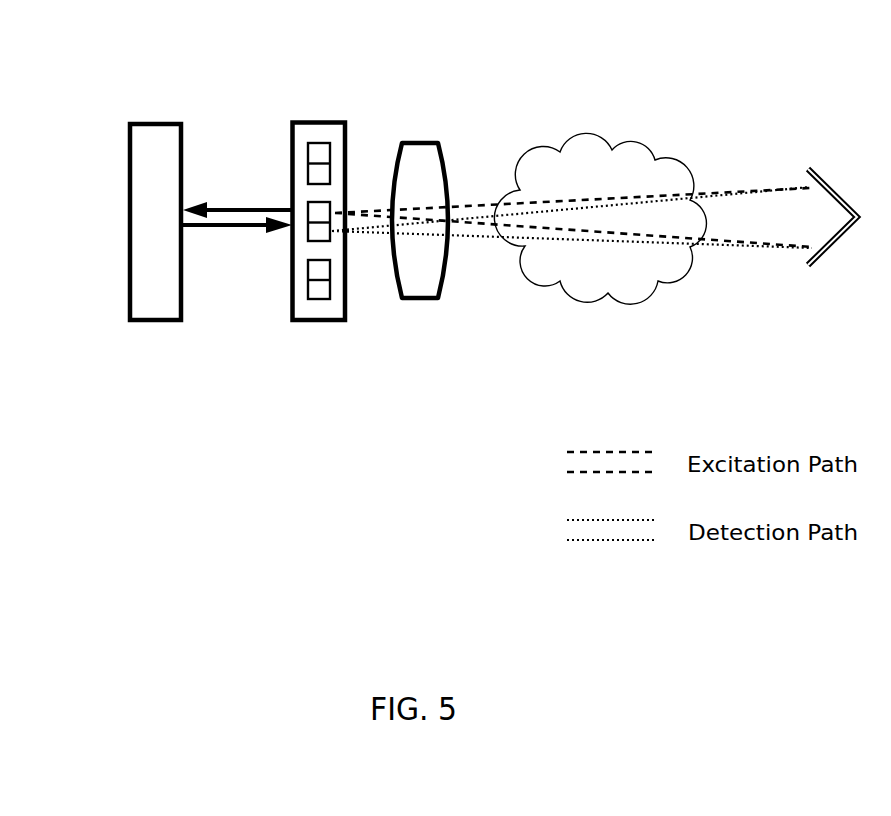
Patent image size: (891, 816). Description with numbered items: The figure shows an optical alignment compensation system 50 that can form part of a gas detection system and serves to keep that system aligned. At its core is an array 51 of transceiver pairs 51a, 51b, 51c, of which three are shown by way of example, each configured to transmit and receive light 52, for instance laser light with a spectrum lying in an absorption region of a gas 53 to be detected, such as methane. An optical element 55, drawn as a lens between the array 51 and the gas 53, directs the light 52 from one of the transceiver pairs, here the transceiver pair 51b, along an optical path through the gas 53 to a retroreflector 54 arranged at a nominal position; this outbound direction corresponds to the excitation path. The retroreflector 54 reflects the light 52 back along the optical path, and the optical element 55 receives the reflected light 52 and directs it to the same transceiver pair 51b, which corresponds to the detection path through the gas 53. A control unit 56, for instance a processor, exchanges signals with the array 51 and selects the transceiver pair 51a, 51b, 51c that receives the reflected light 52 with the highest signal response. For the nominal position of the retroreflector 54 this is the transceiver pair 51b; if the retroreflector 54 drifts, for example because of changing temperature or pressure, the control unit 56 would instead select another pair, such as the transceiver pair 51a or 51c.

The optical alignment compensation system 50 is at (587, 90).
The array of transceiver pairs 51 is at (278, 266).
The transceiver pair 51a is at (315, 150).
The transceiver pair 51b is at (315, 231).
The transceiver pair 51c is at (313, 295).
The light 52 is at (473, 240).
The gas 53 is at (585, 278).
The retroreflector 54 is at (810, 270).
The optical element 55 is at (412, 157).
The control unit 56 is at (145, 132).